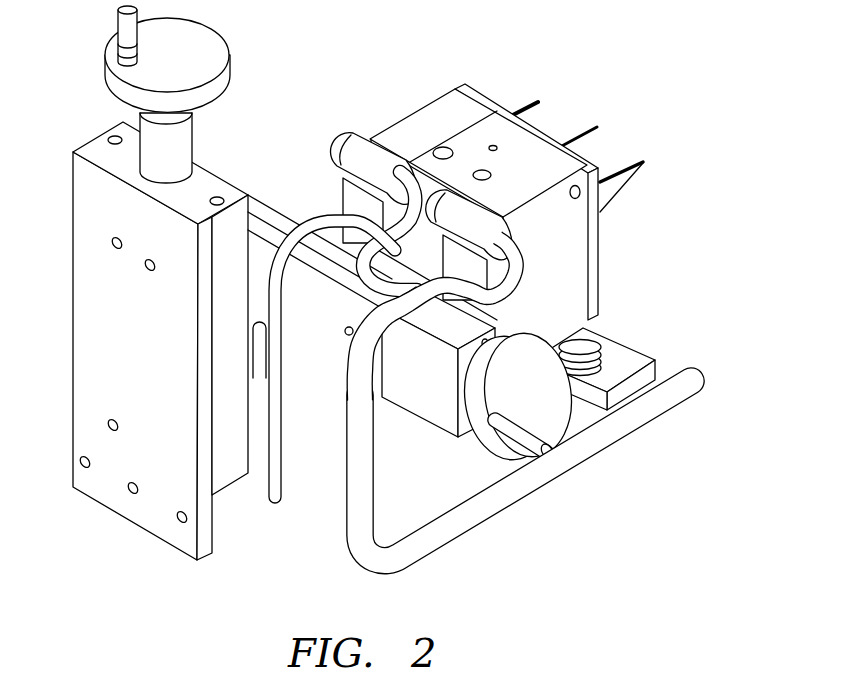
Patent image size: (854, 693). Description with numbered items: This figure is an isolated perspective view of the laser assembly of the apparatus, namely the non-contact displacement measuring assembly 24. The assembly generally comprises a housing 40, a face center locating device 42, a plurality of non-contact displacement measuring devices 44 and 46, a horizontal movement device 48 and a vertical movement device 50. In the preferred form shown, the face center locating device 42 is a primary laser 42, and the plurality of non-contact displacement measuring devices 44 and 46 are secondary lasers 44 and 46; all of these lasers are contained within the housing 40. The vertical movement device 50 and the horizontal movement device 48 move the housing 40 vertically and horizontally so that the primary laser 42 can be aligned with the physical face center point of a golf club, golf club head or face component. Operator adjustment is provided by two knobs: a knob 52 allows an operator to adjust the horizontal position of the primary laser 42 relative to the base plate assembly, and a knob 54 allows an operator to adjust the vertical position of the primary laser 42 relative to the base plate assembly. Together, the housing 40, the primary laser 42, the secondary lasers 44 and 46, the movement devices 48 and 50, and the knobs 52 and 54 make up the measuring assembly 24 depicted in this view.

The non-contact displacement measuring assembly 24 is at (520, 44).
The housing 40 is at (443, 148).
The face center locating device 42 is at (597, 127).
The non-contact displacement measuring device 44 is at (643, 162).
The non-contact displacement measuring device 46 is at (538, 100).
The horizontal movement device 48 is at (418, 420).
The vertical movement device 50 is at (228, 485).
The knob 52 is at (547, 417).
The knob 54 is at (202, 48).